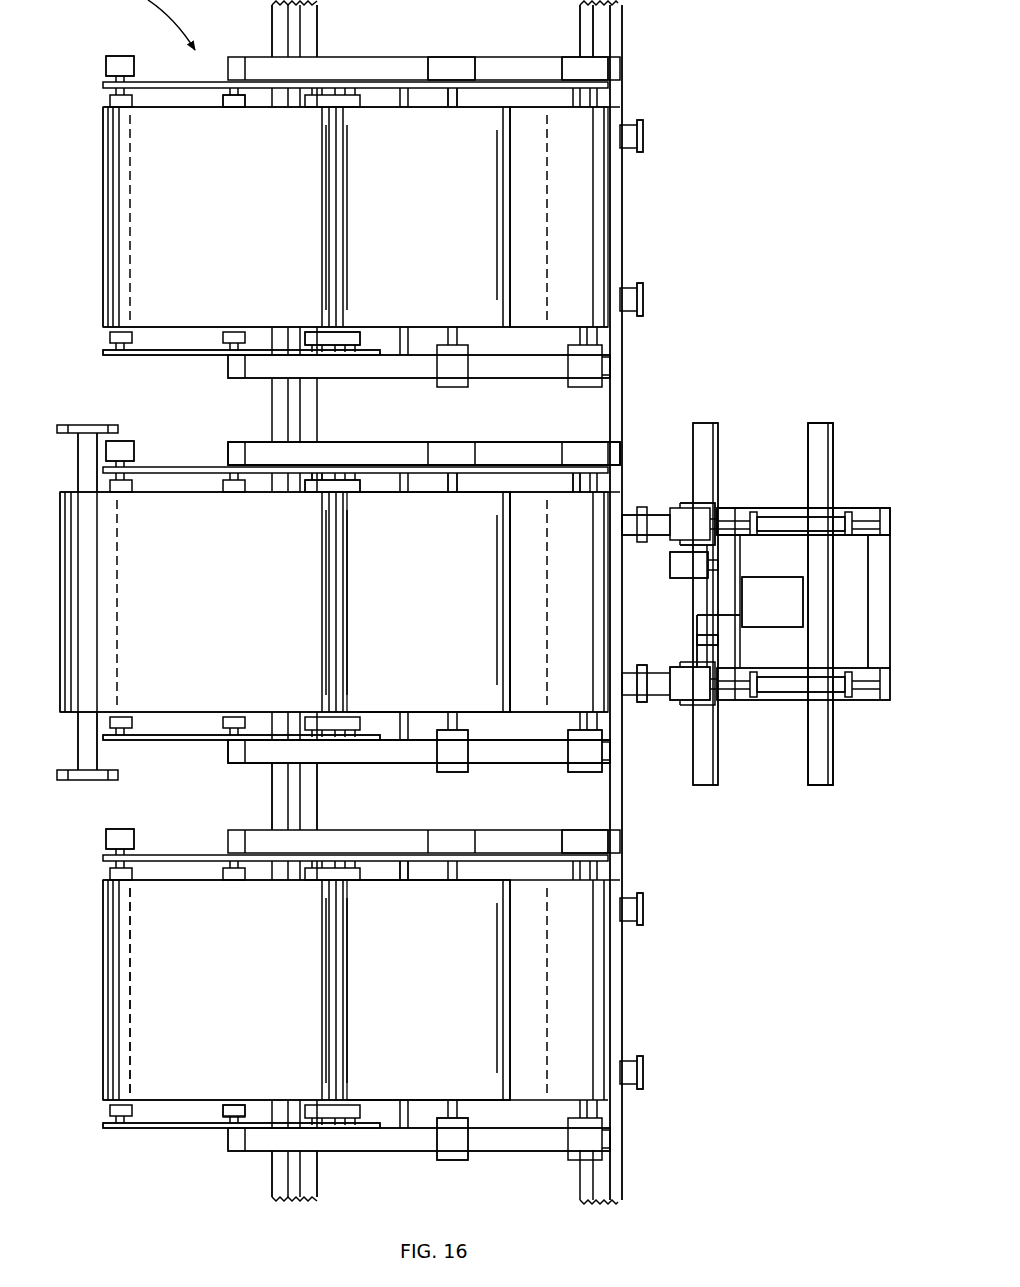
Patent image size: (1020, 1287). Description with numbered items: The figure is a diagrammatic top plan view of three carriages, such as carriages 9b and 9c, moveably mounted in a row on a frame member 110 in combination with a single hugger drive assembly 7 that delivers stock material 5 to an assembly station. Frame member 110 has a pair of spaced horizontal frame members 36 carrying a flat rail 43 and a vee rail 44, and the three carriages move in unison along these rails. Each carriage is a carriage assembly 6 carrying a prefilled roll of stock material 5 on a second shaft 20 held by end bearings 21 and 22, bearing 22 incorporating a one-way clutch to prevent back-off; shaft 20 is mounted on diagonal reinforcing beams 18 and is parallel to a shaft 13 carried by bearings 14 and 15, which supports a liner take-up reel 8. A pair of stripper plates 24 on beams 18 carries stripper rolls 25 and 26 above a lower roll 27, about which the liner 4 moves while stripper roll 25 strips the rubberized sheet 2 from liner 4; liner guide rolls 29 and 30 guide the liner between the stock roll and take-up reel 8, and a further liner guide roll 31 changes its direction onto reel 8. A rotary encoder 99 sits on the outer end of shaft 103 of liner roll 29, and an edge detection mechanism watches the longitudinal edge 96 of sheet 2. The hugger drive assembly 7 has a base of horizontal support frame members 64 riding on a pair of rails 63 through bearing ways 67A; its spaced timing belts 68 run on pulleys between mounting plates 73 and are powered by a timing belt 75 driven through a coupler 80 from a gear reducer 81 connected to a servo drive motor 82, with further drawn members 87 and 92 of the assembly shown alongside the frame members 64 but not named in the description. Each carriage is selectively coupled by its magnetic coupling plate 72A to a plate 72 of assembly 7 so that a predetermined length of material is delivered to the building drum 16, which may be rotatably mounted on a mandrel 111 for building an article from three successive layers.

The rubberized sheet 2 is at (244, 217).
The liner 4 is at (582, 215).
The stock material 5 is at (468, 683).
The carriage assembly 6 is at (402, 0).
The hugger drive assembly 7 is at (850, 500).
The liner take-up reel 8 is at (557, 488).
The carriage 9b is at (378, 438).
The carriage 9c is at (153, 1133).
The shaft 13 is at (583, 480).
The bearing 14 is at (570, 72).
The bearing 15 is at (577, 753).
The building drum 16 is at (72, 493).
The reinforcing beam 18 is at (513, 368).
The second shaft 20 is at (450, 345).
The end bearing 21 is at (448, 68).
The end bearing 22 is at (453, 753).
The stripper plate 24 is at (183, 355).
The stripper roll 25 is at (347, 485).
The stripper roll 26 is at (313, 485).
The lower roll 27 is at (336, 340).
The liner guide roll 29 is at (137, 966).
The liner guide roll 30 is at (232, 102).
The liner guide roll 31 is at (408, 868).
The horizontal frame member 36 is at (623, 398).
The flat rail 43 is at (603, 22).
The vee rail 44 is at (290, 17).
The rail 63 is at (820, 482).
The horizontal support frame member 64 is at (777, 512).
The bearing way 67A is at (823, 440).
The timing belt 68 is at (683, 678).
The magnetic coupling plate 72 is at (646, 508).
The magnetic coupling plate 72A is at (645, 147).
The mounting plate 73 is at (708, 500).
The timing belt 75 is at (680, 557).
The coupler 80 is at (720, 640).
The gear reducer 81 is at (708, 603).
The servo drive motor 82 is at (782, 617).
The piston cylinder 87 is at (792, 526).
The support post 92 is at (882, 688).
The edge 96 is at (283, 886).
The rotary encoder 99 is at (121, 452).
The shaft 103 is at (115, 90).
The frame member 110 is at (272, 1178).
The mandrel 111 is at (88, 753).